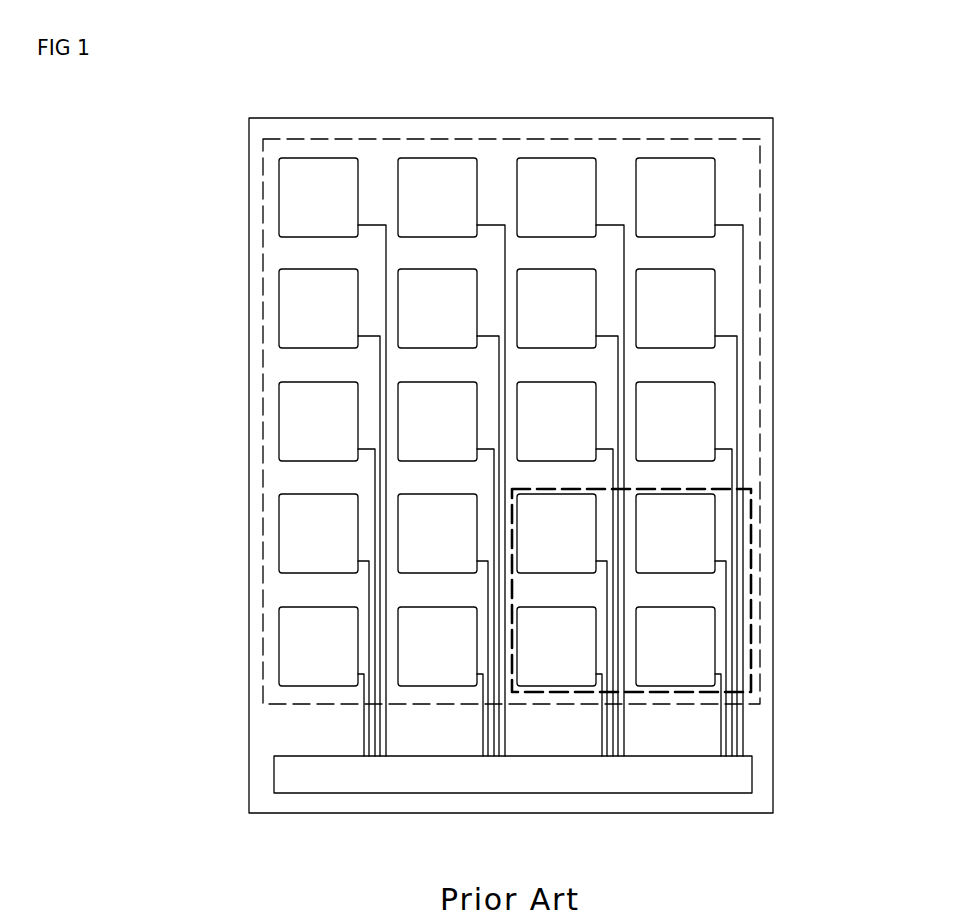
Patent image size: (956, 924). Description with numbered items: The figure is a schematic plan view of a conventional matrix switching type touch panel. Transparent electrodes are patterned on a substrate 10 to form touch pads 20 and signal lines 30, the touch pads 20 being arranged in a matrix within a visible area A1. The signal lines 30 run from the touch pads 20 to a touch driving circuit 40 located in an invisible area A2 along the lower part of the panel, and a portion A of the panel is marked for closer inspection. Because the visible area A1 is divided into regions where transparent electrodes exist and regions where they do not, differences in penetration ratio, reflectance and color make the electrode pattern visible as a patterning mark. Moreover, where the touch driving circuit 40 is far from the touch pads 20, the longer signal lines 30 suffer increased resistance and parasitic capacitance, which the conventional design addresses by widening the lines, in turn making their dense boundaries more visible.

The substrate 10 is at (774, 635).
The touch pads 20 is at (282, 200).
The signal lines 30 is at (393, 740).
The touch driving circuit 40 is at (663, 793).
The visible area A1 is at (262, 590).
The invisible area A2 is at (268, 719).
The enlarged region A is at (752, 512).